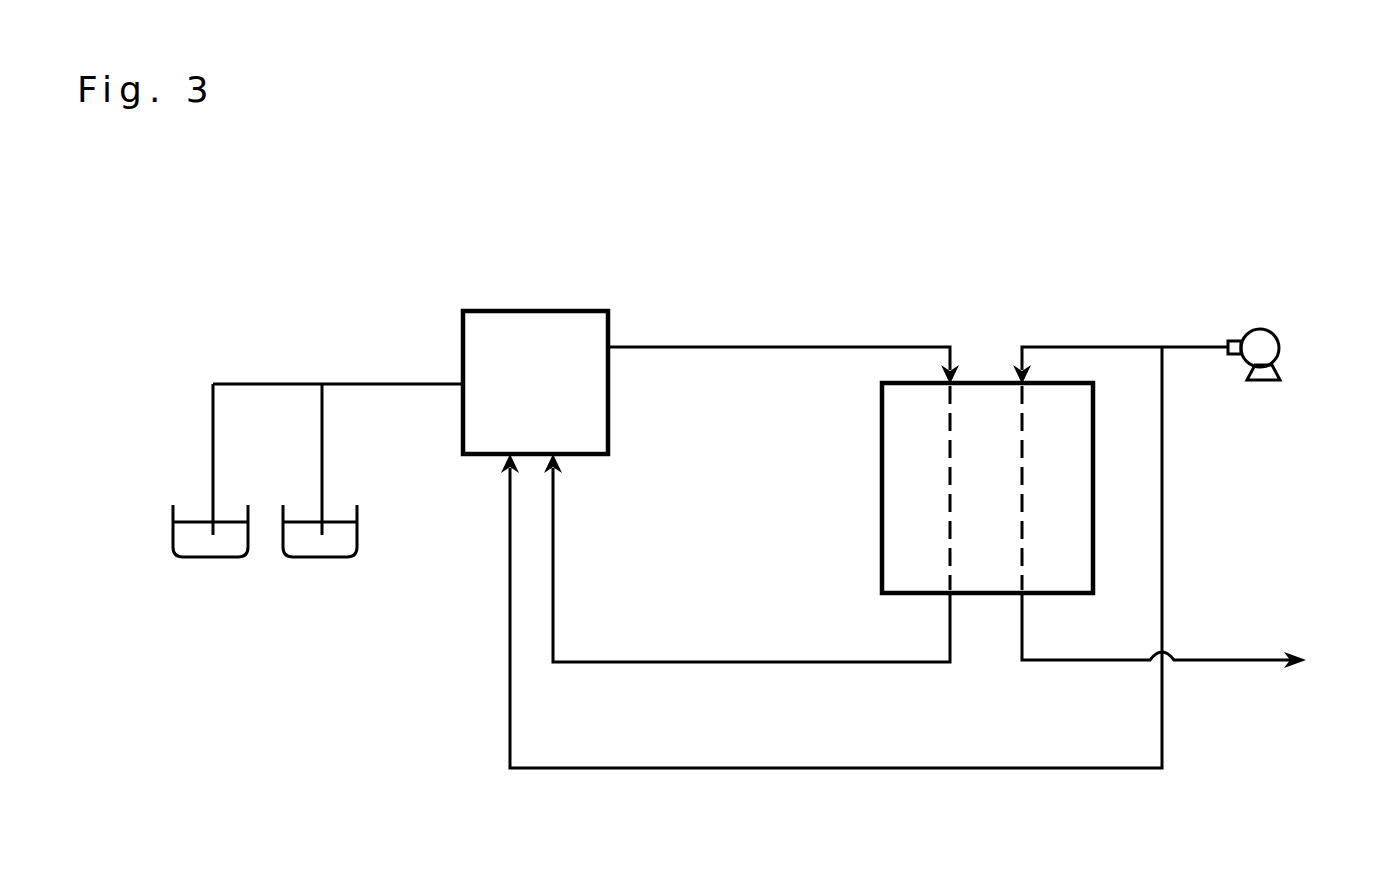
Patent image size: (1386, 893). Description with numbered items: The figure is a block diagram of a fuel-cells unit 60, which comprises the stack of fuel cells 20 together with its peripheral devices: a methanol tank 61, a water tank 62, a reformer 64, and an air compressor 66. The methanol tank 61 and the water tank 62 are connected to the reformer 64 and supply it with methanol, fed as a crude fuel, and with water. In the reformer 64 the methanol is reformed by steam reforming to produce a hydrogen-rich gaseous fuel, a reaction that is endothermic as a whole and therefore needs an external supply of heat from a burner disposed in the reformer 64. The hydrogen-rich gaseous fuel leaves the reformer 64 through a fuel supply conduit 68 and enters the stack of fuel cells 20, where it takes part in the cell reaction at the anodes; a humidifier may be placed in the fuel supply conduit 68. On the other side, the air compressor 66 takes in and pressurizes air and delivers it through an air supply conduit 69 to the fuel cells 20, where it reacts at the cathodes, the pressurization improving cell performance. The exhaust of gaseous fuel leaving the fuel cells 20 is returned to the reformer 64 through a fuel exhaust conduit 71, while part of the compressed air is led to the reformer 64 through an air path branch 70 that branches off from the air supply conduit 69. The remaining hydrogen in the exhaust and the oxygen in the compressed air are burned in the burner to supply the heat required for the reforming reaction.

The fuel-cells unit 60 is at (1081, 246).
The stack of fuel cells 20 is at (882, 500).
The methanol tank 61 is at (213, 557).
The water tank 62 is at (322, 557).
The reformer 64 is at (608, 405).
The air compressor 66 is at (1282, 365).
The fuel supply conduit 68 is at (722, 347).
The air supply conduit 69 is at (1088, 347).
The air path branch 70 is at (1163, 745).
The fuel exhaust conduit 71 is at (917, 664).